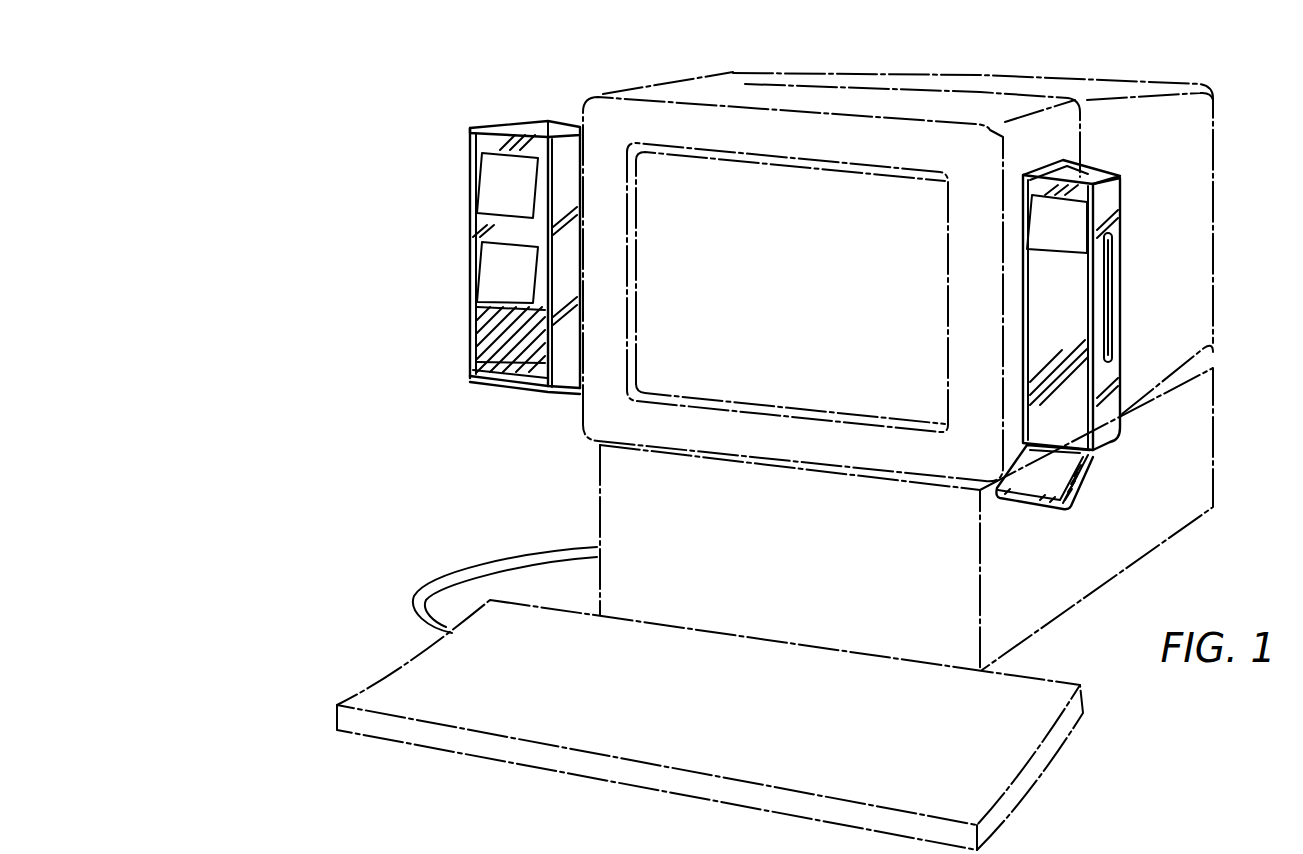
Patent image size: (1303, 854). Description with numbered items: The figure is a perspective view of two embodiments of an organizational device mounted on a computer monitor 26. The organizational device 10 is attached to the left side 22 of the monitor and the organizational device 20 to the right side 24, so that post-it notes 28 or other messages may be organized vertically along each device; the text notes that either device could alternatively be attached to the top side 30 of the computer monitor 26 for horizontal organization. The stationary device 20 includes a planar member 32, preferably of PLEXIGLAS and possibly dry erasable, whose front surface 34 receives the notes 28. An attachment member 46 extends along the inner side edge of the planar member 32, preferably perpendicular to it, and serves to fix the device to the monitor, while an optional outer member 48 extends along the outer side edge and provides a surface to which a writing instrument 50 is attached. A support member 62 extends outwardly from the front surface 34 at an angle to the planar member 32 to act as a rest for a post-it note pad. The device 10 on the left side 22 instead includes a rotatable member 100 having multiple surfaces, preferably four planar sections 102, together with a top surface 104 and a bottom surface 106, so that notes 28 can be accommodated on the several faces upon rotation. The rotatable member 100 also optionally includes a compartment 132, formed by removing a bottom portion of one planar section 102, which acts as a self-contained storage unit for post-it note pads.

The organizational device 10 is at (454, 260).
The organizational device 20 is at (1135, 355).
The left side 22 is at (567, 400).
The right side 24 is at (1057, 133).
The computer monitor 26 is at (668, 84).
The post-it notes 28 is at (490, 270).
The top side 30 is at (897, 100).
The planar member 32 is at (1030, 335).
The front surface 34 is at (1033, 275).
The attachment member 46 is at (1094, 355).
The outer member 48 is at (1107, 424).
The writing instrument 50 is at (1120, 337).
The support member 62 is at (1083, 492).
The rotatable member 100 is at (458, 260).
The planar sections 102 is at (485, 145).
The top surface 104 is at (522, 128).
The bottom surface 106 is at (505, 390).
The compartment 132 is at (490, 345).